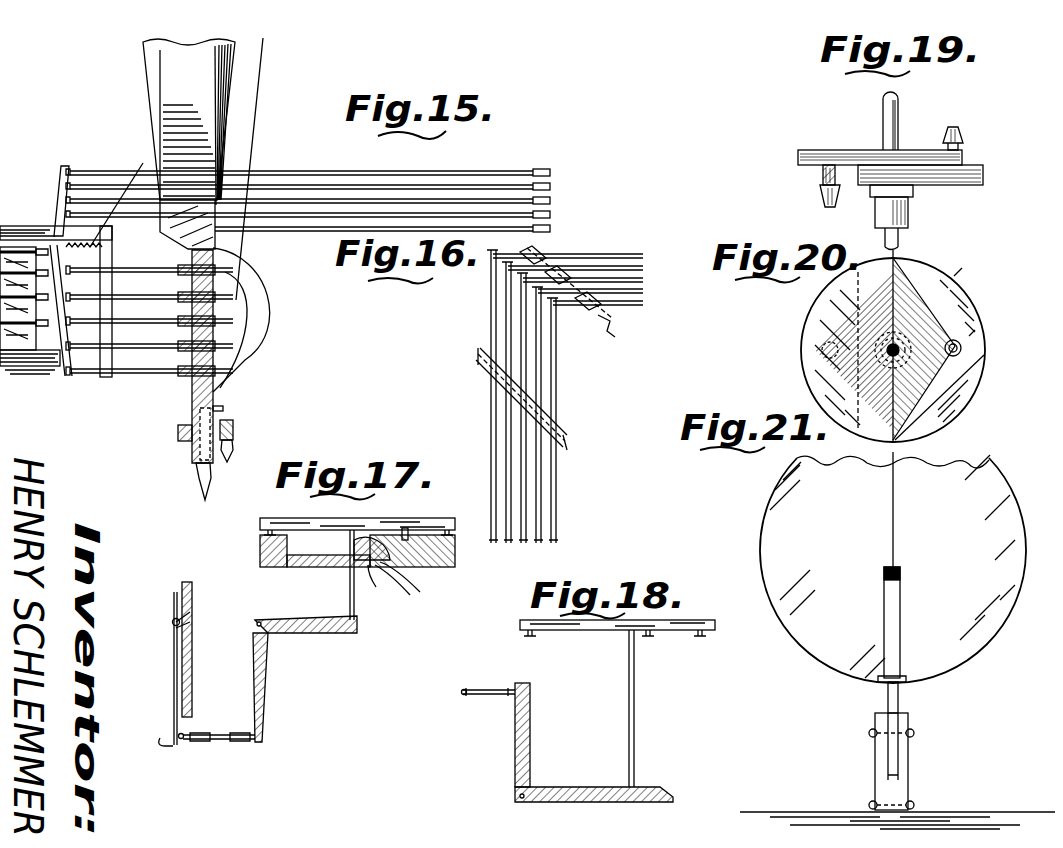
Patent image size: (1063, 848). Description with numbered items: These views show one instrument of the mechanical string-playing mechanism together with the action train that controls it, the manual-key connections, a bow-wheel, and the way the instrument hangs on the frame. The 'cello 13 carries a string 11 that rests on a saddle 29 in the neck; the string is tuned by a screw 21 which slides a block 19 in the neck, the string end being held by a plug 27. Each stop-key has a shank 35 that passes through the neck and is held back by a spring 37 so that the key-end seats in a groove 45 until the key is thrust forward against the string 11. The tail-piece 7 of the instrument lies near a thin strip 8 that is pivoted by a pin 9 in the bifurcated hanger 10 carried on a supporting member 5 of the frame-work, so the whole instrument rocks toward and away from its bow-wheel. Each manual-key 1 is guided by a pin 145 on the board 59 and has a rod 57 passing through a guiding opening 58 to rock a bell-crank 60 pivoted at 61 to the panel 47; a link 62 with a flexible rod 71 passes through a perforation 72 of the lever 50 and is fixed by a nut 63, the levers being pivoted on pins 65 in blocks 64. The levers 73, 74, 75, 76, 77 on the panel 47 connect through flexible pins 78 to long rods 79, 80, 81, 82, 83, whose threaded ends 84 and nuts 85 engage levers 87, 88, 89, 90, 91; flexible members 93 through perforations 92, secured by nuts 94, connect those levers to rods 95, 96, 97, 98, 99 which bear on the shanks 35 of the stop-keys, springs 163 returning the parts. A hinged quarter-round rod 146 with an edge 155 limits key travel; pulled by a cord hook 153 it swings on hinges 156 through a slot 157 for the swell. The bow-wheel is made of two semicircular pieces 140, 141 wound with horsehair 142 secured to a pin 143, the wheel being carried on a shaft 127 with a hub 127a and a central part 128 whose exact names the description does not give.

In FIG. 17, the manual-key 1 is at (428, 517).
In FIG. 18, the manual-key 1 is at (680, 620).
In FIG. 21, the subordinate supporting member 5 is at (920, 812).
In FIG. 21, the tail-piece 7 is at (893, 655).
In FIG. 21, the thin strip 8 is at (898, 700).
In FIG. 21, the pin 9 is at (914, 733).
In FIG. 21, the bifurcated support or hanger 10 is at (880, 757).
In FIG. 15, the string 11 is at (262, 60).
In FIG. 21, the string 11 is at (893, 497).
In FIG. 15, the 'cello 13 is at (189, 144).
In FIG. 15, the block 19 is at (233, 430).
In FIG. 15, the screw 21 is at (211, 488).
In FIG. 15, the plug 27 is at (233, 456).
In FIG. 15, the saddle 29 is at (223, 409).
In FIG. 15, the shank or stem 35 is at (192, 386).
In FIG. 15, the spring 37 is at (239, 330).
In FIG. 15, the notch or groove 45 is at (255, 300).
In FIG. 21, the notch or groove 45 is at (876, 569).
In FIG. 17, the panel 47 is at (192, 660).
In FIG. 17, the lever 50 is at (173, 672).
In FIG. 17, the rod or link 57 is at (350, 598).
In FIG. 18, the rod or link 57 is at (634, 700).
In FIG. 17, the guiding opening 58 is at (340, 568).
In FIG. 17, the board 59 is at (300, 568).
In FIG. 17, the bell-crank 60 is at (266, 666).
In FIG. 18, the bell-crank 60 is at (585, 803).
In FIG. 17, the pivot 61 is at (256, 624).
In FIG. 18, the pivot 61 is at (519, 796).
In FIG. 17, the link 62 is at (250, 741).
In FIG. 18, the link 62 is at (500, 694).
In FIG. 17, the nut 63 is at (181, 740).
In FIG. 18, the nut 63 is at (463, 696).
In FIG. 16, the block 64 is at (592, 308).
In FIG. 17, the block 64 is at (174, 636).
In FIG. 16, the pin 65 is at (608, 318).
In FIG. 17, the pin 65 is at (172, 622).
In FIG. 17, the screw-threaded wire or flexible rod 71 is at (154, 735).
In FIG. 17, the perforation 72 is at (215, 740).
In FIG. 15, the lever 73 is at (550, 228).
In FIG. 16, the lever 73 is at (643, 303).
In FIG. 15, the lever 74 is at (550, 214).
In FIG. 16, the lever 74 is at (643, 291).
In FIG. 15, the lever 75 is at (550, 200).
In FIG. 16, the lever 75 is at (643, 280).
In FIG. 15, the lever 76 is at (550, 186).
In FIG. 16, the lever 76 is at (643, 268).
In FIG. 15, the lever 77 is at (550, 172).
In FIG. 16, the lever 77 is at (643, 256).
In FIG. 15, the flexible pin 78 is at (540, 233).
In FIG. 16, the long rod 79 is at (493, 248).
In FIG. 15, the long rod 80 is at (406, 216).
In FIG. 15, the long rod 81 is at (437, 202).
In FIG. 15, the long rod 82 is at (466, 188).
In FIG. 15, the long rod 83 is at (505, 172).
In FIG. 15, the flexible screw-threaded rod 84 is at (62, 170).
In FIG. 15, the nut 85 is at (72, 172).
In FIG. 15, the lever 87 is at (72, 363).
In FIG. 15, the lever 88 is at (72, 338).
In FIG. 15, the lever 89 is at (72, 313).
In FIG. 15, the lever 90 is at (72, 289).
In FIG. 15, the lever 91 is at (72, 262).
In FIG. 15, the perforation 92 is at (43, 323).
In FIG. 15, the flexible member 93 is at (57, 345).
In FIG. 15, the nut 94 is at (69, 378).
In FIG. 15, the rod 95 is at (180, 372).
In FIG. 15, the rod 96 is at (137, 355).
In FIG. 15, the rod 97 is at (128, 316).
In FIG. 15, the rod 98 is at (163, 296).
In FIG. 15, the rod 99 is at (163, 270).
In FIG. 19, the shaft 127 is at (898, 105).
In FIG. 20, the shaft 127 is at (940, 335).
In FIG. 19, the shaft hub 127a is at (908, 215).
In FIG. 20, the hub 128 is at (830, 362).
In FIG. 19, the semicircular piece 140 is at (960, 185).
In FIG. 19, the semicircular piece 141 is at (825, 150).
In FIG. 19, the horsehair strands 142 is at (928, 137).
In FIG. 20, the horsehair strands 142 is at (960, 375).
In FIG. 19, the pin 143 is at (963, 135).
In FIG. 20, the pin 143 is at (961, 345).
In FIG. 16, the pin 145 is at (474, 530).
In FIG. 17, the pin 145 is at (262, 532).
In FIG. 18, the pin 145 is at (525, 637).
In FIG. 17, the rod or piece of quarter-round 146 is at (405, 528).
In FIG. 17, the hook 153 is at (420, 590).
In FIG. 17, the edge 155 is at (365, 538).
In FIG. 17, the hinge 156 is at (403, 580).
In FIG. 17, the slot 157 is at (381, 586).
In FIG. 15, the spring 163 is at (108, 196).